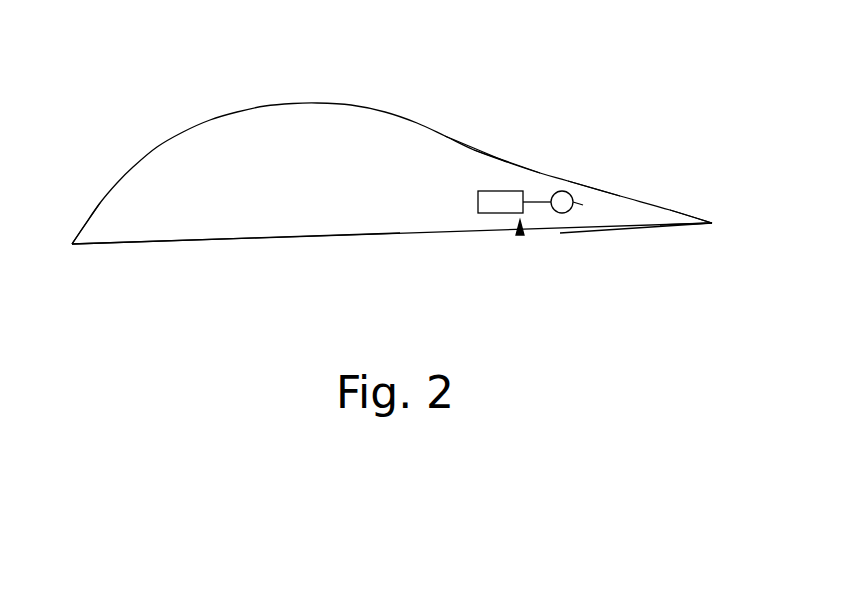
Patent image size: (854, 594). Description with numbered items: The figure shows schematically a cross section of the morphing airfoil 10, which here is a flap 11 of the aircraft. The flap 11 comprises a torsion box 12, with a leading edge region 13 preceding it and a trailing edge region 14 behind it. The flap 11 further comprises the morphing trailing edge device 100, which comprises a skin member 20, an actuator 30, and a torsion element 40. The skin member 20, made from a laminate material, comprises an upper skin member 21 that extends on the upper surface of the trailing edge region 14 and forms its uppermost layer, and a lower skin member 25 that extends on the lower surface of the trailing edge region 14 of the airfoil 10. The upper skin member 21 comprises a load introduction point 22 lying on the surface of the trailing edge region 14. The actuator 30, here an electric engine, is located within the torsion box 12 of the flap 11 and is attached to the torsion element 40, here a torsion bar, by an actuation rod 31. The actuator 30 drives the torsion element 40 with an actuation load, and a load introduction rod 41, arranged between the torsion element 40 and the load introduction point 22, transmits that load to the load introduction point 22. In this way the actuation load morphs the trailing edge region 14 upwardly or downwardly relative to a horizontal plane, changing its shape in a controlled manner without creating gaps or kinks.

The morphing airfoil 10 is at (125, 127).
The flap 11 is at (155, 87).
The torsion box 12 is at (287, 220).
The leading edge region 13 is at (112, 233).
The trailing edge region 14 is at (632, 212).
The skin member 20 is at (516, 164).
The upper skin member 21 is at (493, 157).
The load introduction point 22 is at (578, 200).
The lower skin member 25 is at (678, 223).
The actuator 30 is at (492, 191).
The actuation rod 31 is at (528, 205).
The torsion element 40 is at (562, 191).
The load introduction rod 41 is at (580, 207).
The morphing trailing edge device 100 is at (520, 236).